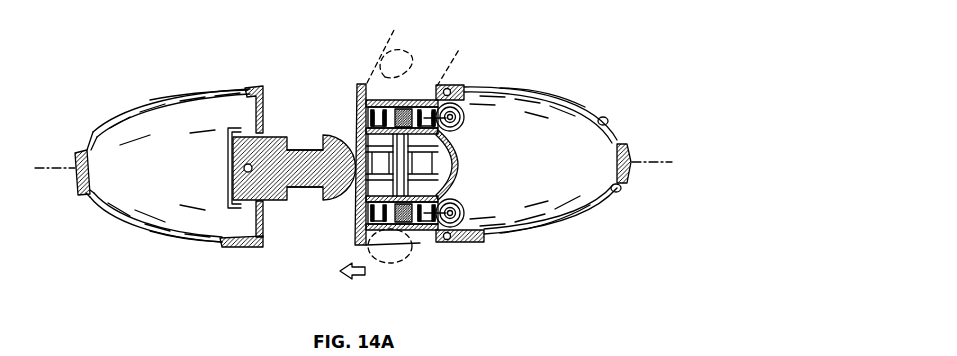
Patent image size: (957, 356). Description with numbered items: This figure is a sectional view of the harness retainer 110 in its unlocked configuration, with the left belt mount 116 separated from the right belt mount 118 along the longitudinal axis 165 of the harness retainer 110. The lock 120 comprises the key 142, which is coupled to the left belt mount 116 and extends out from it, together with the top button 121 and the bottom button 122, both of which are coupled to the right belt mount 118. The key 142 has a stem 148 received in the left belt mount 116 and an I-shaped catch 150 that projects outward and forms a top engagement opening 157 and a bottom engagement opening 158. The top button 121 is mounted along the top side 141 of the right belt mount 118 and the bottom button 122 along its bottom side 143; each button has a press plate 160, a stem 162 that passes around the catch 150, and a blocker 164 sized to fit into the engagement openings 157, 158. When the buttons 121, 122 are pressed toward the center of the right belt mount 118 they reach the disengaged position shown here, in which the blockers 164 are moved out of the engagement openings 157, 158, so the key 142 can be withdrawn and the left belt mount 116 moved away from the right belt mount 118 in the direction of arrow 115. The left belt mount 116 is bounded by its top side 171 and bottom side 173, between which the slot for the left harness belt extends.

The harness retainer 110 is at (582, 36).
The arrow 115 is at (356, 280).
The left belt mount 116 is at (121, 94).
The right belt mount 118 is at (598, 82).
The lock 120 is at (451, 77).
The top button 121 is at (371, 82).
The bottom button 122 is at (430, 248).
The top side 141 is at (528, 96).
The key 142 is at (274, 121).
The bottom side 143 is at (560, 233).
The stem 148 is at (243, 209).
The catch 150 is at (338, 201).
The top engagement opening 157 is at (306, 149).
The bottom engagement opening 158 is at (306, 188).
The press plate 160 is at (453, 101).
The stem 162 is at (455, 121).
The blocker 164 is at (420, 168).
The longitudinal axis 165 is at (43, 166).
The top side 171 is at (182, 101).
The bottom side 173 is at (139, 230).